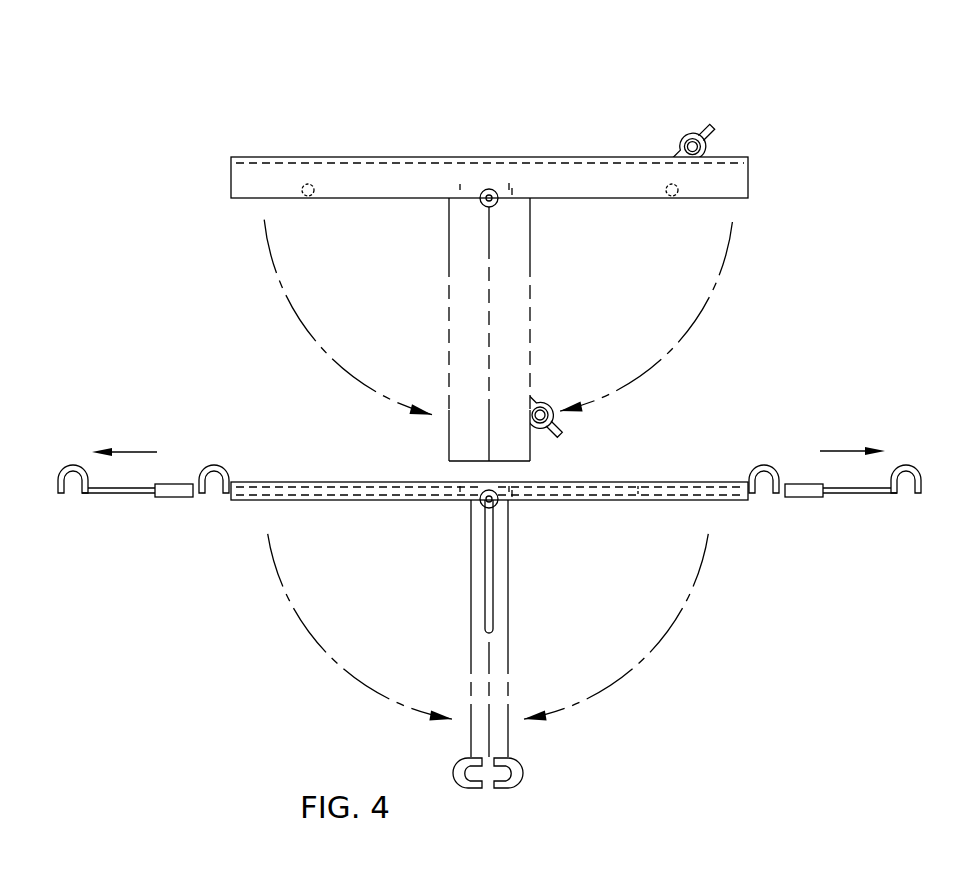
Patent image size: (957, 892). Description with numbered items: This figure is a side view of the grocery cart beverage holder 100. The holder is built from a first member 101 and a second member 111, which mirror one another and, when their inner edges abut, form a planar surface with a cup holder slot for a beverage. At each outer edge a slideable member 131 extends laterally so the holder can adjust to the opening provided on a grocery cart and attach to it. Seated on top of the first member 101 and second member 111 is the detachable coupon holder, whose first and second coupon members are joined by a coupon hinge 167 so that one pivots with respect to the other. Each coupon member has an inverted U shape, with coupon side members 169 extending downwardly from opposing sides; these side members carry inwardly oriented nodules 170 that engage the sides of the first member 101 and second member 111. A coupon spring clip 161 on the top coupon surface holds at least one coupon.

The grocery cart beverage holder 100 is at (62, 140).
The coupon side members 169 is at (231, 178).
The nodules 170 is at (310, 196).
The coupon hinge 167 is at (482, 192).
The coupon spring clip 161 is at (682, 135).
The first member 101 is at (378, 500).
The second member 111 is at (560, 500).
The slideable member 131 is at (932, 445).